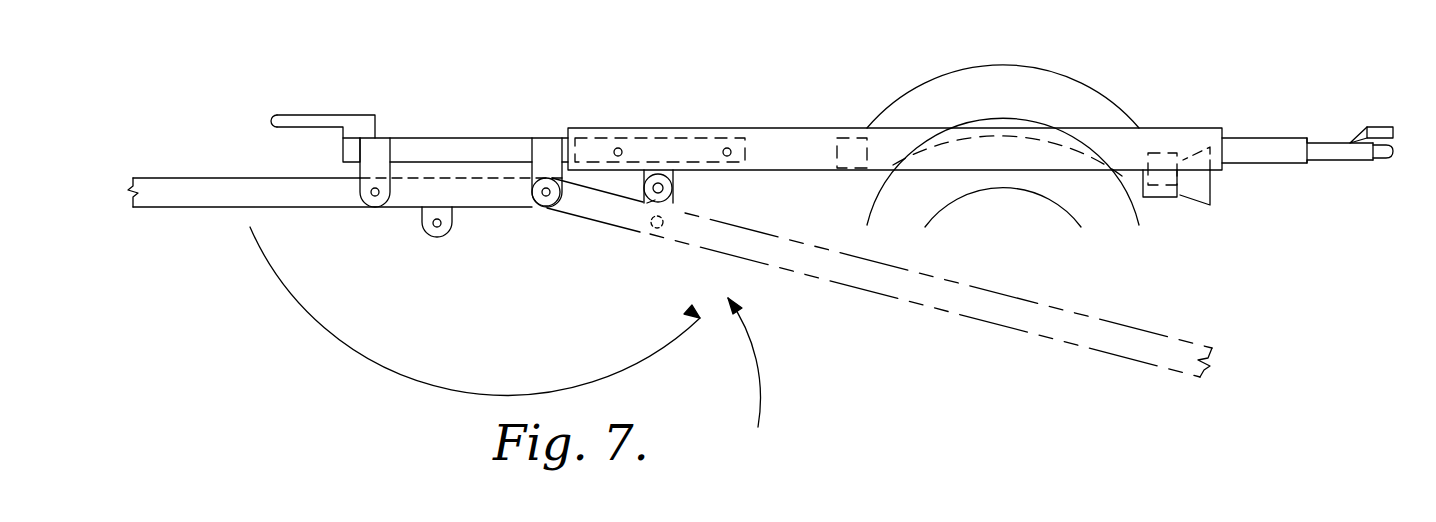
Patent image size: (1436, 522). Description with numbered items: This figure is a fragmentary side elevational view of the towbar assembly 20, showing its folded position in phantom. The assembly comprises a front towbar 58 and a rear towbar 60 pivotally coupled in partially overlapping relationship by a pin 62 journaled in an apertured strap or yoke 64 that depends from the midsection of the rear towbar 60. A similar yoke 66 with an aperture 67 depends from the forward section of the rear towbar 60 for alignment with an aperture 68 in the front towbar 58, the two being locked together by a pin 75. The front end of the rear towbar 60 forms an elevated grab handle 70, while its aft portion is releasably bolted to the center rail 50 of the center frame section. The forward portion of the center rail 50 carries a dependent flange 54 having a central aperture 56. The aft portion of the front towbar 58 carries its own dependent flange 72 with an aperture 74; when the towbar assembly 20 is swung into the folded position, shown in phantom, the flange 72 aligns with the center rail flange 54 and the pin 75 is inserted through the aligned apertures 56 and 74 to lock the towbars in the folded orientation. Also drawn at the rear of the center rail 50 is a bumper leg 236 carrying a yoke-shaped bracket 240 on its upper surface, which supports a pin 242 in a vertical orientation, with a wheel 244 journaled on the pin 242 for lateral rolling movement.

The towbar assembly 20 is at (512, 347).
The center rail 50 is at (827, 135).
The dependent flange 54 is at (677, 175).
The central aperture 56 is at (647, 203).
The front towbar 58 is at (205, 182).
The rear towbar 60 is at (467, 145).
The pin 62 is at (545, 195).
The yoke 64 is at (551, 143).
The yoke 66 is at (380, 150).
The aperture 67 is at (375, 197).
The aperture 68 is at (652, 230).
The grab handle 70 is at (295, 120).
The dependent flange 72 is at (437, 233).
The aperture 74 is at (427, 228).
The pin 75 is at (660, 180).
The bumper leg 236 is at (1325, 158).
The yoke-shaped bracket 240 is at (1355, 140).
The pin 242 is at (1393, 127).
The wheel 244 is at (1392, 158).